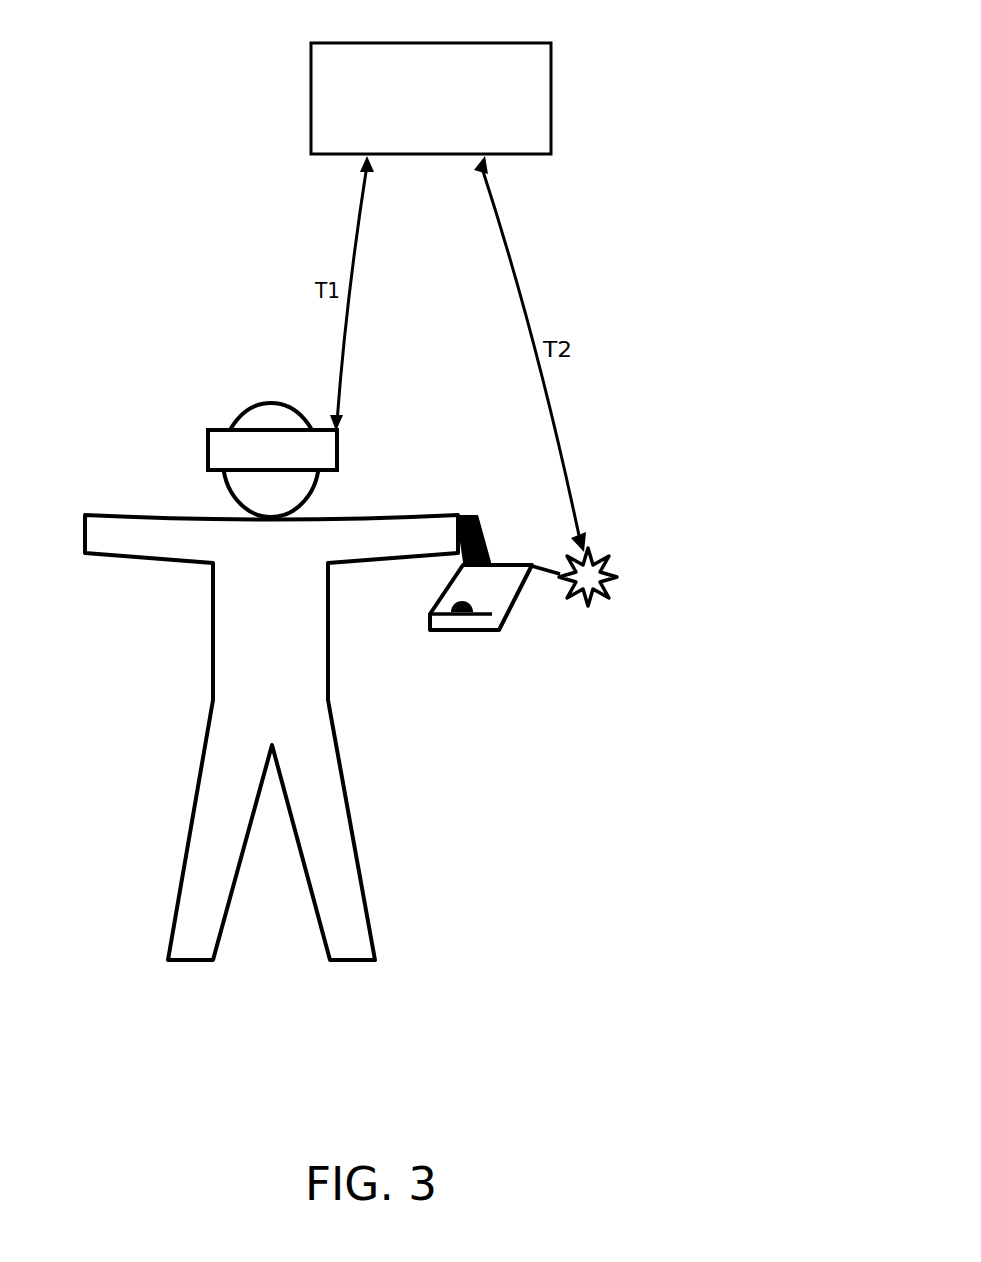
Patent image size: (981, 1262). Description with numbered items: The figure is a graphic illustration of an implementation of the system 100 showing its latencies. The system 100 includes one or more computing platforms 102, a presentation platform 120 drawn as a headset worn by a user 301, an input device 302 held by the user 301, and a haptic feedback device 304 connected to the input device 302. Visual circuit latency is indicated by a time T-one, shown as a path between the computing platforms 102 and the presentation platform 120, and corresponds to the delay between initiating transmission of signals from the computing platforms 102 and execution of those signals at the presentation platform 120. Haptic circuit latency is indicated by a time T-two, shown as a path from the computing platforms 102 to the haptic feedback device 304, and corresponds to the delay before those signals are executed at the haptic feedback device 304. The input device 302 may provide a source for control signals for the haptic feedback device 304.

The system 100 is at (698, 95).
The computing platforms 102 is at (513, 124).
The presentation platform 120 is at (208, 445).
The user 301 is at (214, 712).
The input device 302 is at (458, 633).
The haptic feedback device 304 is at (617, 575).